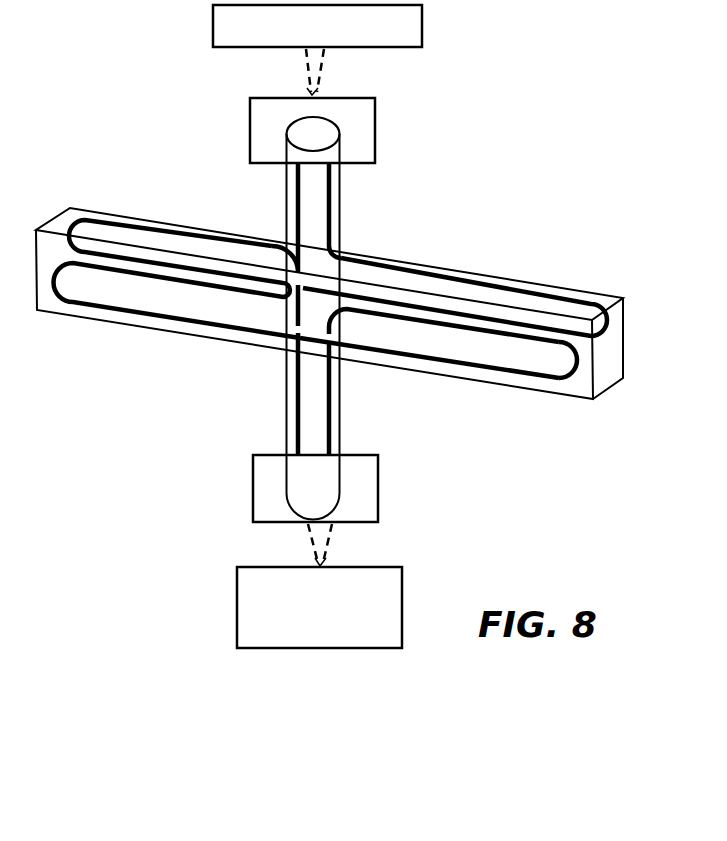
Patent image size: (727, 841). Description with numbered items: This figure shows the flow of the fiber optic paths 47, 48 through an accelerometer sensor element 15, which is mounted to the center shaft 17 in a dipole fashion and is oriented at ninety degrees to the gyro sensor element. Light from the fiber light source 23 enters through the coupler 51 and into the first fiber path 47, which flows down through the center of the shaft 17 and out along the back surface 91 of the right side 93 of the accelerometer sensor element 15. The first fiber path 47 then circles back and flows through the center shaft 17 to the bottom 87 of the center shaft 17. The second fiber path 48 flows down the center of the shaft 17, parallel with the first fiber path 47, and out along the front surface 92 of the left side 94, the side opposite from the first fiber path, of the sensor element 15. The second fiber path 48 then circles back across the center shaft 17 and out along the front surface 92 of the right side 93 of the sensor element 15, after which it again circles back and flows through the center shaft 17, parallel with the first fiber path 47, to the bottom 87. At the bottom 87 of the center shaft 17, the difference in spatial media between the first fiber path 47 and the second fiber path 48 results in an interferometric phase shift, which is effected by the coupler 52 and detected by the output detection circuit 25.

The fiber light source 23 is at (422, 32).
The coupler 51 is at (375, 115).
The center shaft 17 is at (340, 150).
The fiber path 2 48 is at (297, 186).
The fiber path 1 47 is at (330, 190).
The accelerometer sensor element 15 is at (612, 362).
The back surface 91 is at (615, 322).
The left side 94 is at (172, 298).
The right side 93 is at (502, 348).
The front surface 92 is at (583, 376).
The coupler 52 is at (378, 481).
The bottom of the center shaft 87 is at (332, 498).
The output detection circuit 25 is at (237, 595).